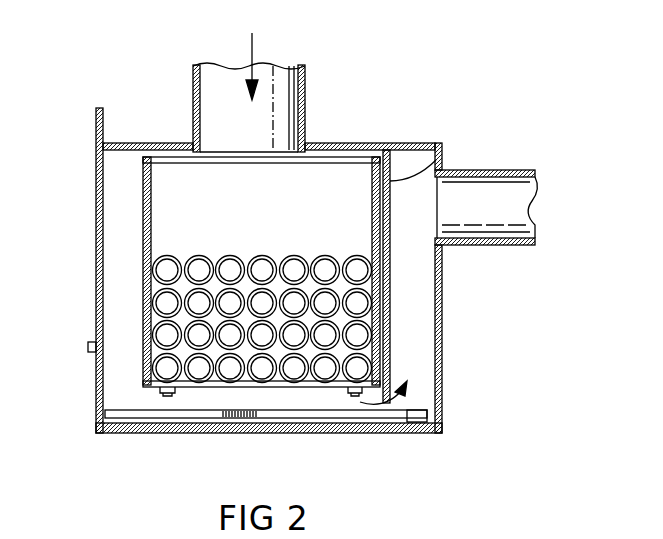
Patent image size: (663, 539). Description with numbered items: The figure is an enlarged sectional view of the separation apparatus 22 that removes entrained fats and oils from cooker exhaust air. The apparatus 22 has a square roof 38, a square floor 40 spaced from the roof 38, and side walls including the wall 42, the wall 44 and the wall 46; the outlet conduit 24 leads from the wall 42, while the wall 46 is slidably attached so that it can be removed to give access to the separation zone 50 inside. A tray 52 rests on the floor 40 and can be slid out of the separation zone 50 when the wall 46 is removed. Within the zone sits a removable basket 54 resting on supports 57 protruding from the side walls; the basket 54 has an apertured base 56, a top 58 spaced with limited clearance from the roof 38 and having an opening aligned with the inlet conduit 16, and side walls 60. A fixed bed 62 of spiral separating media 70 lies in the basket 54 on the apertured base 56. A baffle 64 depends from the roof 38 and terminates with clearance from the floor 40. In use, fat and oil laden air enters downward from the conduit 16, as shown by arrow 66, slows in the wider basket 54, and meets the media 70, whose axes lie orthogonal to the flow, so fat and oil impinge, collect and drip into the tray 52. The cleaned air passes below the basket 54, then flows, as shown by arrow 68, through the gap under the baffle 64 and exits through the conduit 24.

The conduit 16 is at (193, 85).
The separation apparatus 22 is at (484, 120).
The conduit 24 is at (497, 228).
The square roof 38 is at (378, 143).
The square floor 40 is at (380, 433).
The side wall 42 is at (442, 322).
The side wall 44 is at (227, 397).
The side wall 46 is at (96, 384).
The separation zone 50 is at (118, 253).
The tray 52 is at (147, 413).
The basket 54 is at (122, 221).
The apertured base 56 is at (287, 387).
The supports 57 is at (167, 396).
The top 58 is at (324, 158).
The side walls 60 is at (144, 188).
The fixed bed 62 is at (342, 228).
The baffle 64 is at (445, 160).
The arrow 66 is at (252, 56).
The arrow 68 is at (405, 432).
The spiral separating media 70 is at (262, 262).